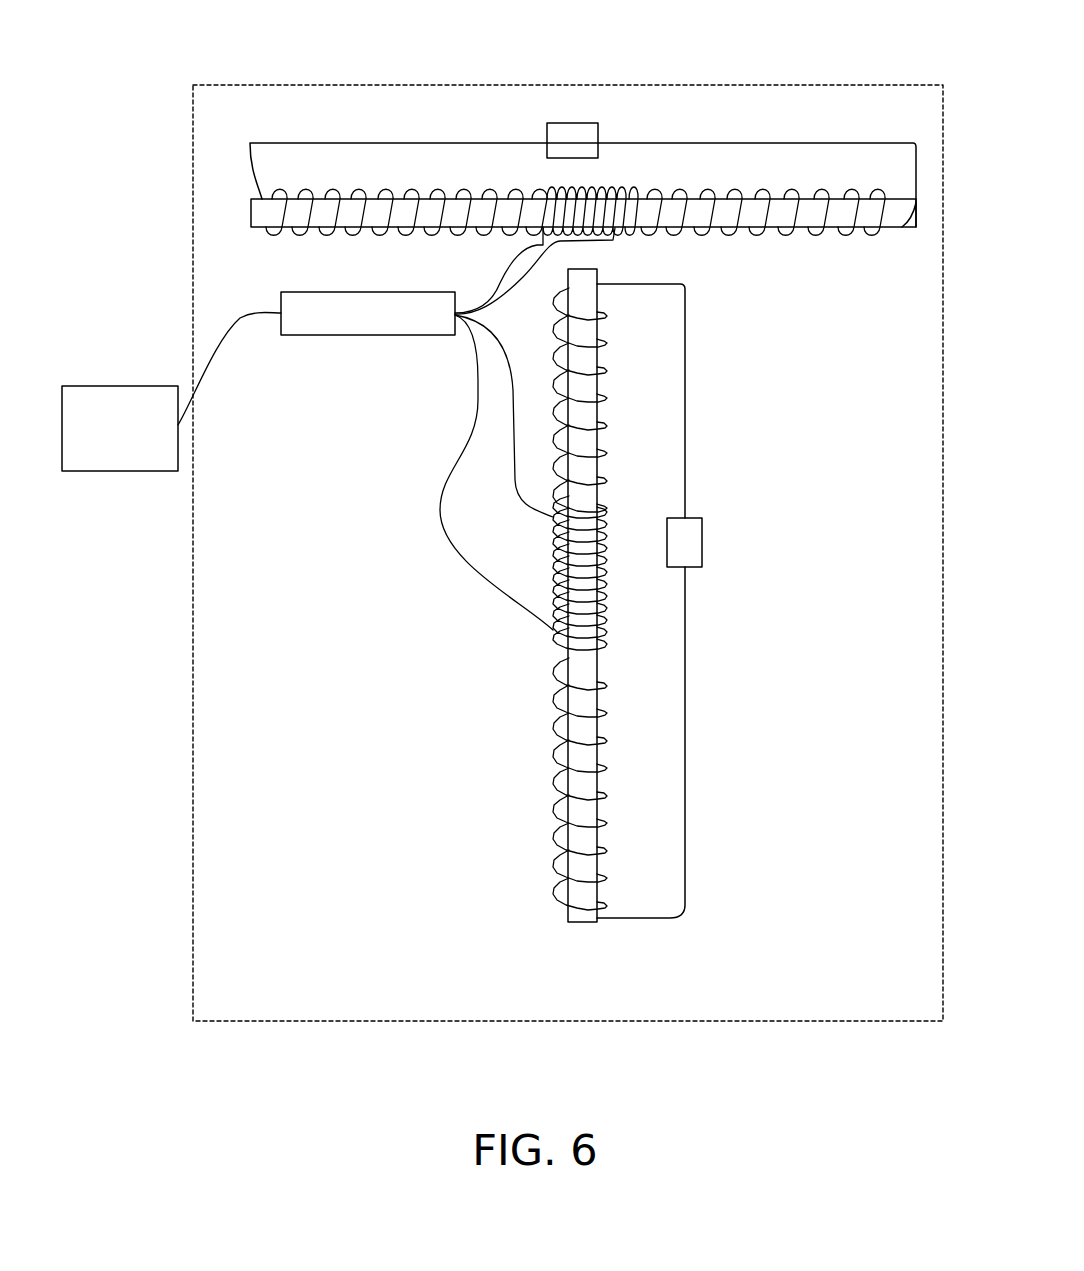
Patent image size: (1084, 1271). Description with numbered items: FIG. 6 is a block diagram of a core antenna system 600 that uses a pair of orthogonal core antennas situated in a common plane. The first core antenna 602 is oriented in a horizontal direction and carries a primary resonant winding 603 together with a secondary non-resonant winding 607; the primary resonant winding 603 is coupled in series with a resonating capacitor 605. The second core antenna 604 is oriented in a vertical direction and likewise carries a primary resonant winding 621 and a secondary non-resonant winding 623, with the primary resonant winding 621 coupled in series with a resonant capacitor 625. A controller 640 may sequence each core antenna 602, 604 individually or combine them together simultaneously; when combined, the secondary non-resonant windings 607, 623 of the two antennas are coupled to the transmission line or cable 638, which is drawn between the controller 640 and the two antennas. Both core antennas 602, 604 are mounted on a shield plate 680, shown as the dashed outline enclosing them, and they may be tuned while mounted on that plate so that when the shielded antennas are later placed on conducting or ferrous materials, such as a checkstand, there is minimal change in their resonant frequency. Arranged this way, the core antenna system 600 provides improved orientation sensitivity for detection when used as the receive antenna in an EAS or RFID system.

The core antenna system 600 is at (172, 45).
The first core antenna 602 is at (212, 201).
The primary resonant winding 603 is at (847, 236).
The second core antenna 604 is at (583, 935).
The resonating capacitor 605 is at (570, 123).
The secondary non-resonant winding 607 is at (643, 184).
The primary resonant winding 621 is at (545, 848).
The secondary non-resonant winding 623 is at (540, 552).
The resonant capacitor 625 is at (702, 540).
The transmission line or cable 638 is at (333, 335).
The controller 640 is at (118, 386).
The shield plate 680 is at (775, 1021).